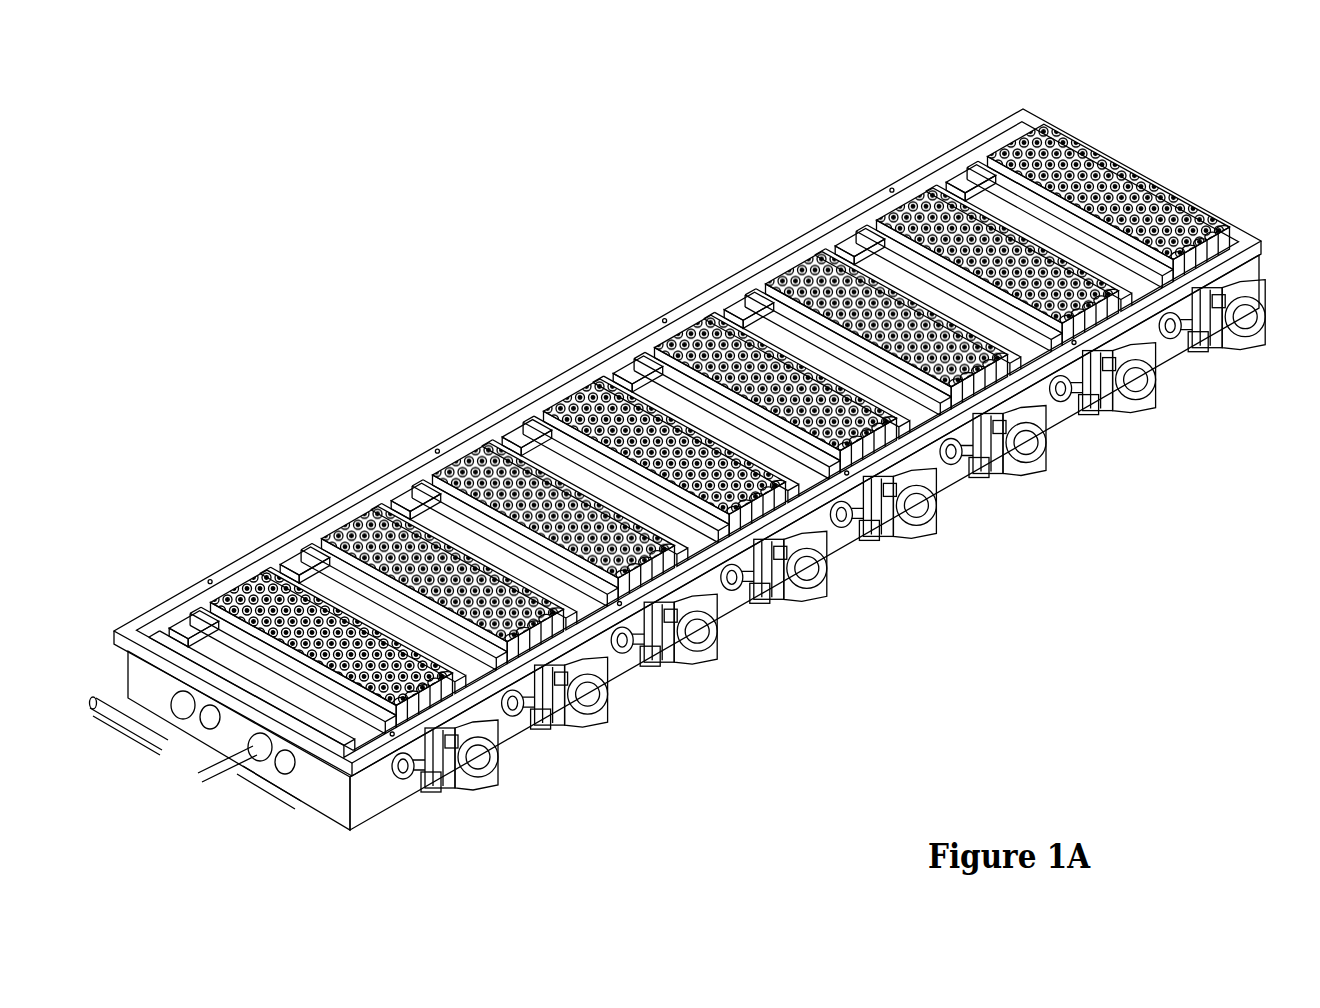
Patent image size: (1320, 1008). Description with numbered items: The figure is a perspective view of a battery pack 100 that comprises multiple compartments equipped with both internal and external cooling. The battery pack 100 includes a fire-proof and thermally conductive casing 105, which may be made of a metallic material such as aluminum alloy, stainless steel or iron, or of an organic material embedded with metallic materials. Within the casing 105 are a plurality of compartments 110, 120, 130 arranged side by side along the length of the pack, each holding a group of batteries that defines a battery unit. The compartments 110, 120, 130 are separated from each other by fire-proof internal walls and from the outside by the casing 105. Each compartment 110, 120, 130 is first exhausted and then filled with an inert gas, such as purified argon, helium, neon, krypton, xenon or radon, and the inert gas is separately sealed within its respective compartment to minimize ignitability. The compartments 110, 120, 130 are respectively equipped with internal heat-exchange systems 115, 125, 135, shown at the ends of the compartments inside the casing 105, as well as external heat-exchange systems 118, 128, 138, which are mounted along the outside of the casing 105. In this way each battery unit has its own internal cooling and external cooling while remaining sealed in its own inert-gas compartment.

The battery pack 100 is at (1113, 157).
The casing 105 is at (1203, 221).
The compartment 110 is at (232, 593).
The internal heat-exchange system 115 is at (192, 628).
The external heat-exchange system 118 is at (487, 767).
The compartment 120 is at (372, 535).
The internal heat-exchange system 125 is at (307, 570).
The external heat-exchange system 128 is at (553, 713).
The compartment 130 is at (995, 152).
The internal heat-exchange system 135 is at (952, 197).
The external heat-exchange system 138 is at (1247, 337).